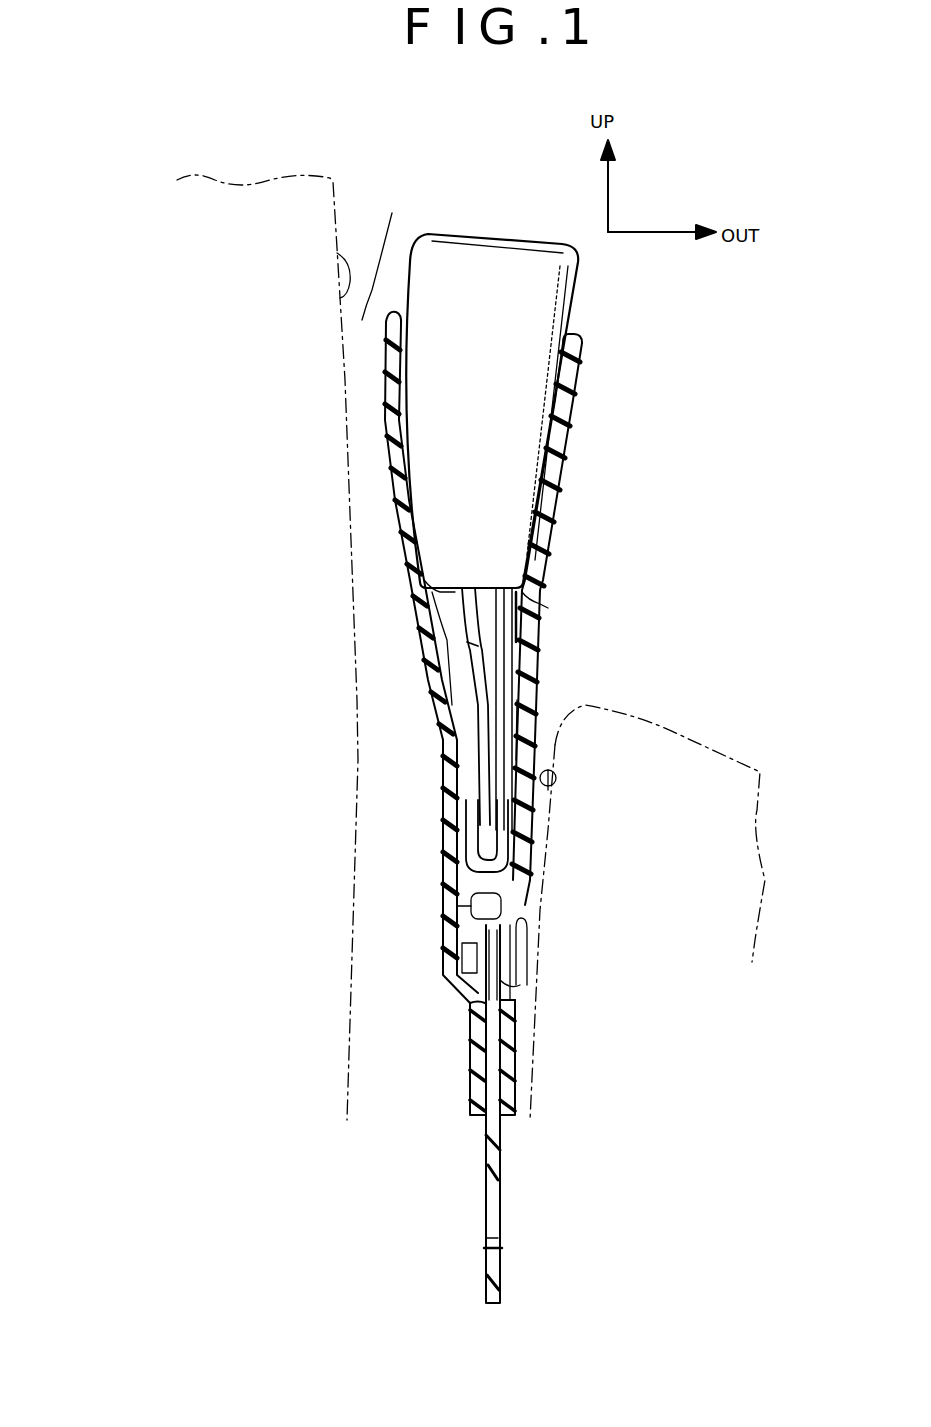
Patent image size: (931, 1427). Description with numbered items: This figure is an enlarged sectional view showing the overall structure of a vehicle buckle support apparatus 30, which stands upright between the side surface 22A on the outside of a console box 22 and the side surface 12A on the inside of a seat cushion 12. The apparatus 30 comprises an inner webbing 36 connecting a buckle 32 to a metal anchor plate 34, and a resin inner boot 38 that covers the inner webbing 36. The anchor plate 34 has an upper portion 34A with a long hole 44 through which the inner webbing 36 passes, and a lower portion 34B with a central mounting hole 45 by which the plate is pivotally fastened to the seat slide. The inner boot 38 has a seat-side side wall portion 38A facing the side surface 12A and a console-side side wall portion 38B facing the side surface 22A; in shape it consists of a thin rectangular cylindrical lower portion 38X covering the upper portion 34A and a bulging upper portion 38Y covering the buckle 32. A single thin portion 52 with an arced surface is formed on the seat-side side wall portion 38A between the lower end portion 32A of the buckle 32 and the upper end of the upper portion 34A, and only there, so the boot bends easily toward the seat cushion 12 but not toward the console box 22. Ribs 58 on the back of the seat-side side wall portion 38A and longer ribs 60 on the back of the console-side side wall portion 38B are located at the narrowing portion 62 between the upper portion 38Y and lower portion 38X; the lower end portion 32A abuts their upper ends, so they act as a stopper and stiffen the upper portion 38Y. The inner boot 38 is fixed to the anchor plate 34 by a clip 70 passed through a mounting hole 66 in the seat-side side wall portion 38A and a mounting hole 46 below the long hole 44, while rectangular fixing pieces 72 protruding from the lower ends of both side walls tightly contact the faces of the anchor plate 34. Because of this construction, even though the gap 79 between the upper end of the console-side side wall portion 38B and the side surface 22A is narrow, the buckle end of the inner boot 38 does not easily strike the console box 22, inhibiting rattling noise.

The seat cushion 12 is at (647, 881).
The side surface of the seat cushion 12A is at (556, 783).
The console box 22 is at (267, 606).
The side surface of the console box 22A is at (340, 297).
The vehicle buckle support apparatus 30 is at (482, 734).
The buckle 32 is at (574, 242).
The lower end portion of the buckle 32A is at (422, 643).
The anchor plate 34 is at (507, 1114).
The upper portion of the anchor plate 34A is at (505, 1018).
The lower portion of the anchor plate 34B is at (498, 1266).
The inner webbing 36 is at (482, 703).
The inner boot 38 is at (457, 657).
The seat-side side wall portion 38A is at (560, 505).
The console-side side wall portion 38B is at (395, 478).
The lower portion of the inner boot 38X is at (445, 828).
The upper portion of the inner boot 38Y is at (388, 388).
The long hole 44 is at (472, 905).
The mounting hole 45 is at (488, 1243).
The mounting hole 46 is at (465, 972).
The thin portion 52 is at (540, 747).
The ribs 58 is at (548, 606).
The ribs 60 is at (424, 620).
The narrowing portion 62 is at (410, 570).
The mounting hole 66 is at (522, 983).
The clip 70 is at (530, 950).
The fixing piece 72 is at (470, 1070).
The gap 79 is at (386, 248).